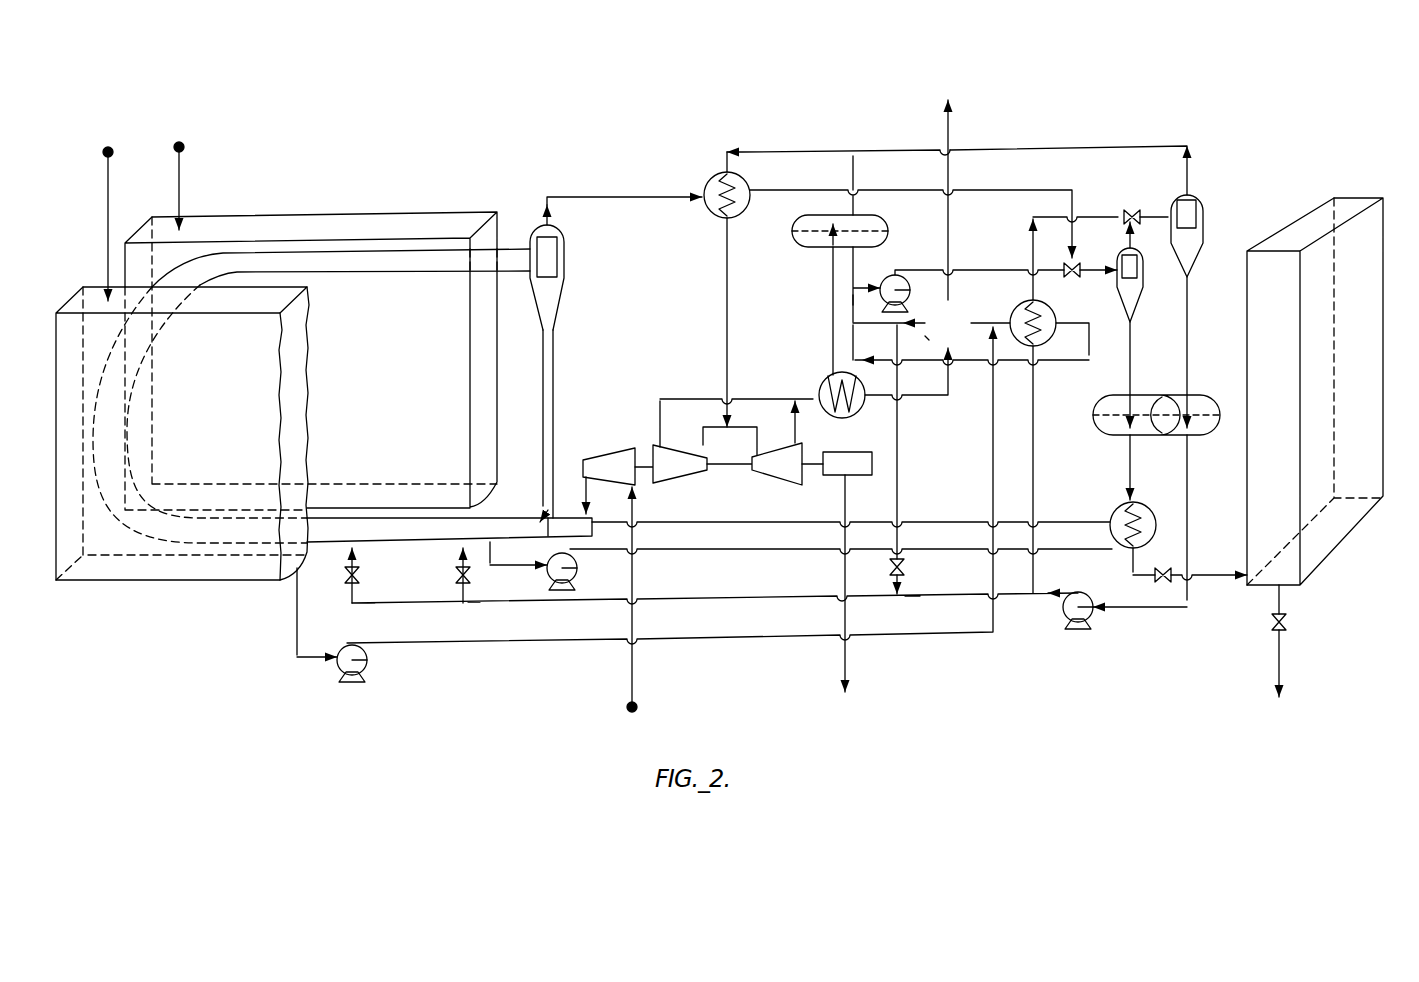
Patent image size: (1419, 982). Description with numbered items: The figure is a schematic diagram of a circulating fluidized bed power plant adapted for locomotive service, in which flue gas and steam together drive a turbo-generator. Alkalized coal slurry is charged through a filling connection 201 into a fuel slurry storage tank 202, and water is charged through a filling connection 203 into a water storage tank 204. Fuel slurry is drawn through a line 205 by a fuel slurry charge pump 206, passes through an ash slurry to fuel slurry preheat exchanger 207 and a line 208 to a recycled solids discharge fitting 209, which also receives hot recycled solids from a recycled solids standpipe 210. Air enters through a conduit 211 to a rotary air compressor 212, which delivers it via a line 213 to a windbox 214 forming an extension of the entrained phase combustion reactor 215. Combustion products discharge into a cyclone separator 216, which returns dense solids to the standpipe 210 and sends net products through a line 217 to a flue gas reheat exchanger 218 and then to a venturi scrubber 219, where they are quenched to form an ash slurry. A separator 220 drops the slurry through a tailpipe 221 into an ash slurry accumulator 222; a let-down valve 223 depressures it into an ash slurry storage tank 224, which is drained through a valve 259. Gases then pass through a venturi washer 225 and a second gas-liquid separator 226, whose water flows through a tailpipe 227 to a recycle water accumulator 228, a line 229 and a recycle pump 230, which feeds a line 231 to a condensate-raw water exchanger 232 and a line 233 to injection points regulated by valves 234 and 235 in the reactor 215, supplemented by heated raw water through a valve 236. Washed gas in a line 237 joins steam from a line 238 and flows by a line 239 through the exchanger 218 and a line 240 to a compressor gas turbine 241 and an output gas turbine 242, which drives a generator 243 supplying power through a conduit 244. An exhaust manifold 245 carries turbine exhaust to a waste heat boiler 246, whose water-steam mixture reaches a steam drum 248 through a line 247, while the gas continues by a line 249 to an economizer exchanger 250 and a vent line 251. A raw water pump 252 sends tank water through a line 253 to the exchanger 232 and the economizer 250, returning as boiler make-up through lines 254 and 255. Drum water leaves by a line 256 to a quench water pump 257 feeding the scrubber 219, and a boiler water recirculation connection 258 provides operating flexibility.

The filling connection 201 is at (182, 186).
The fuel slurry storage tank 202 is at (318, 225).
The filling connection 203 is at (110, 186).
The water storage tank 204 is at (195, 568).
The line 205 is at (530, 565).
The fuel slurry charge pump 206 is at (577, 562).
The ash slurry to fuel slurry preheat exchanger 207 is at (1112, 505).
The line 208 is at (962, 522).
The recycled solids discharge fitting 209 is at (546, 542).
The recycled solids standpipe 210 is at (553, 368).
The conduit 211 is at (634, 660).
The rotary air compressor 212 is at (620, 445).
The line 213 is at (580, 484).
The windbox 214 is at (595, 522).
The entrained phase combustion reactor 215 is at (425, 543).
The cyclone separator 216 is at (565, 262).
The line 217 is at (637, 196).
The flue gas reheat exchanger 218 is at (706, 215).
The venturi scrubber 219 is at (1072, 278).
The separator 220 is at (1138, 305).
The tailpipe 221 is at (1110, 392).
The ash slurry accumulator 222 is at (1125, 437).
The let-down valve 223 is at (1165, 572).
The ash slurry storage tank 224 is at (1335, 540).
The venturi washer 225 is at (1132, 210).
The second gas-liquid separator 226 is at (1203, 228).
The tailpipe 227 is at (1190, 372).
The recycle water accumulator 228 is at (1200, 437).
The line 229 is at (1190, 480).
The recycle pump 230 is at (1082, 593).
The line 231 is at (1036, 425).
The condensate-raw water exchanger 232 is at (1025, 300).
The line 233 is at (975, 598).
The valve 234 is at (456, 575).
The valve 235 is at (346, 585).
The valve 236 is at (905, 568).
The line 237 is at (1110, 148).
The line 238 is at (857, 182).
The line 239 is at (820, 150).
The line 240 is at (720, 305).
The compressor gas turbine 241 is at (683, 483).
The output gas turbine 242 is at (780, 485).
The generator 243 is at (847, 488).
The conduit 244 is at (843, 665).
The exhaust manifold 245 is at (752, 398).
The waste heat boiler 246 is at (846, 418).
The line 247 is at (823, 278).
The steam drum 248 is at (882, 216).
The line 249 is at (920, 400).
The economizer exchanger 250 is at (927, 338).
The vent line 251 is at (950, 228).
The raw water pump 252 is at (345, 650).
The line 253 is at (730, 635).
The line 254 is at (1089, 360).
The line 255 is at (883, 333).
The line 256 is at (855, 268).
The quench water pump 257 is at (935, 240).
The boiler water recirculation connection 258 is at (853, 300).
The valve 259 is at (1287, 622).